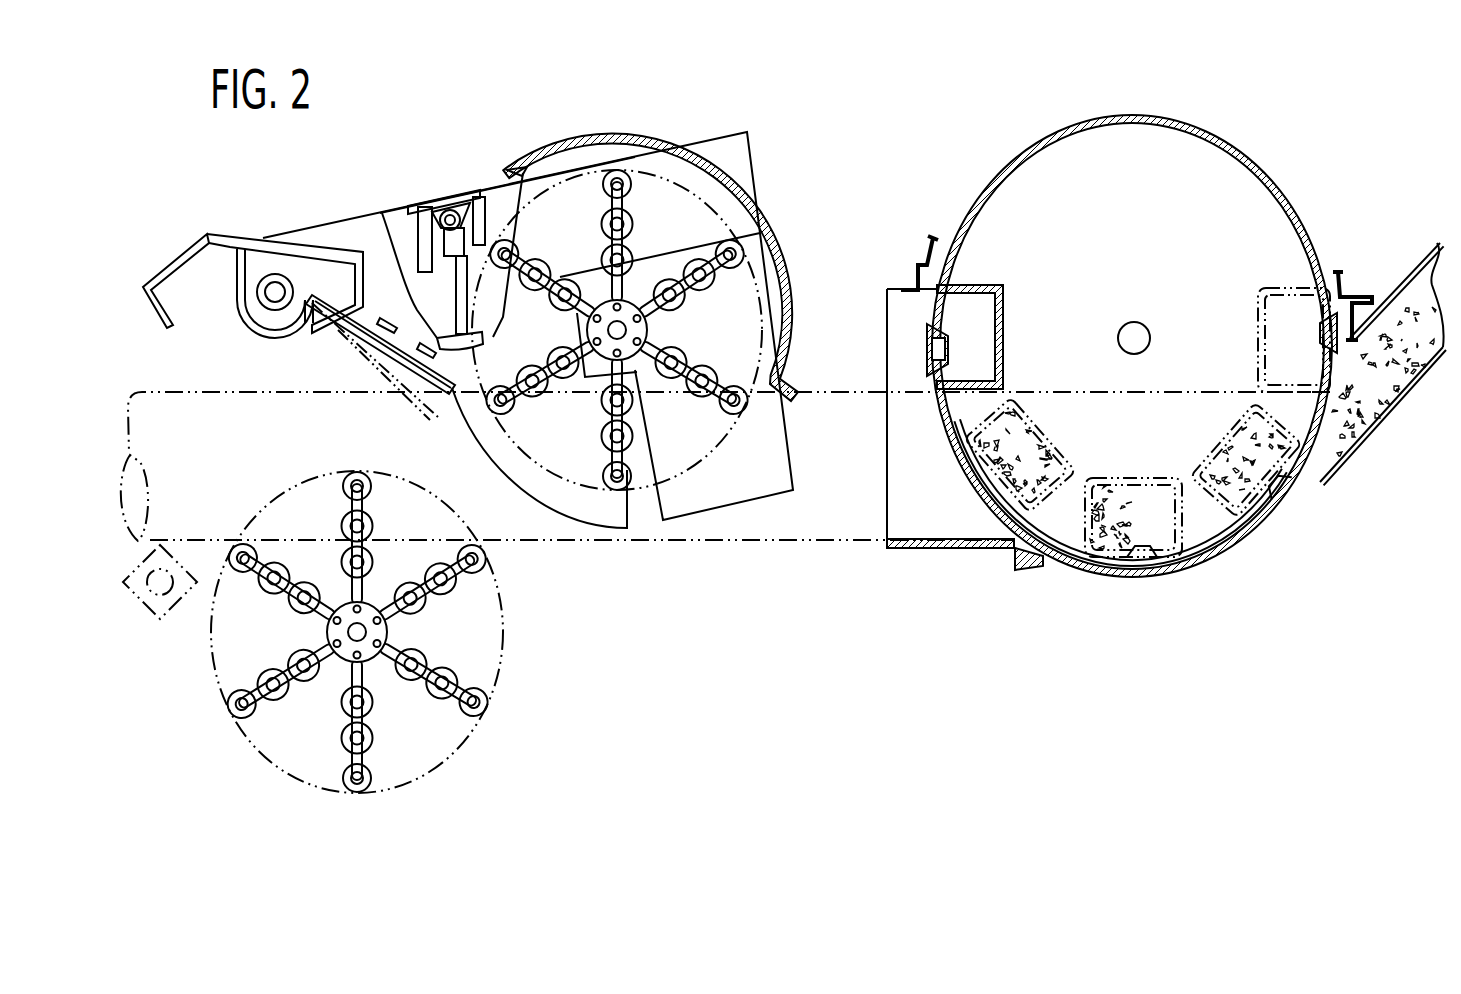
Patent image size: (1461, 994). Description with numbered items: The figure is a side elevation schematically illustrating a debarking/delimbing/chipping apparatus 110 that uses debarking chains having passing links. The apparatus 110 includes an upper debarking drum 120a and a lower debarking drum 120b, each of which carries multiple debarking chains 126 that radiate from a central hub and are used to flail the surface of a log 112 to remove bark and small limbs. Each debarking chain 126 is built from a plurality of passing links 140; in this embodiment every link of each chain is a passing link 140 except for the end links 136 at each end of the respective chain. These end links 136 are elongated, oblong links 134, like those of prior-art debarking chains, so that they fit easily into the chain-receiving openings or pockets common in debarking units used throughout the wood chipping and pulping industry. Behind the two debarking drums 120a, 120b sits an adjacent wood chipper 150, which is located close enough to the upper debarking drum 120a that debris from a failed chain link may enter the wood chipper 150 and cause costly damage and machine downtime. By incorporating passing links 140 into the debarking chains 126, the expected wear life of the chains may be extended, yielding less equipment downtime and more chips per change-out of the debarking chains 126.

The debarking/delimbing/chipping apparatus 110 is at (549, 97).
The log 112 is at (703, 541).
The upper debarking drum 120a is at (781, 248).
The lower debarking drum 120b is at (382, 660).
The debarking chain 126 is at (279, 699).
The elongated oblong link 134 is at (478, 592).
The end link 136 is at (484, 718).
The passing link 140 is at (466, 642).
The wood chipper 150 is at (1155, 592).